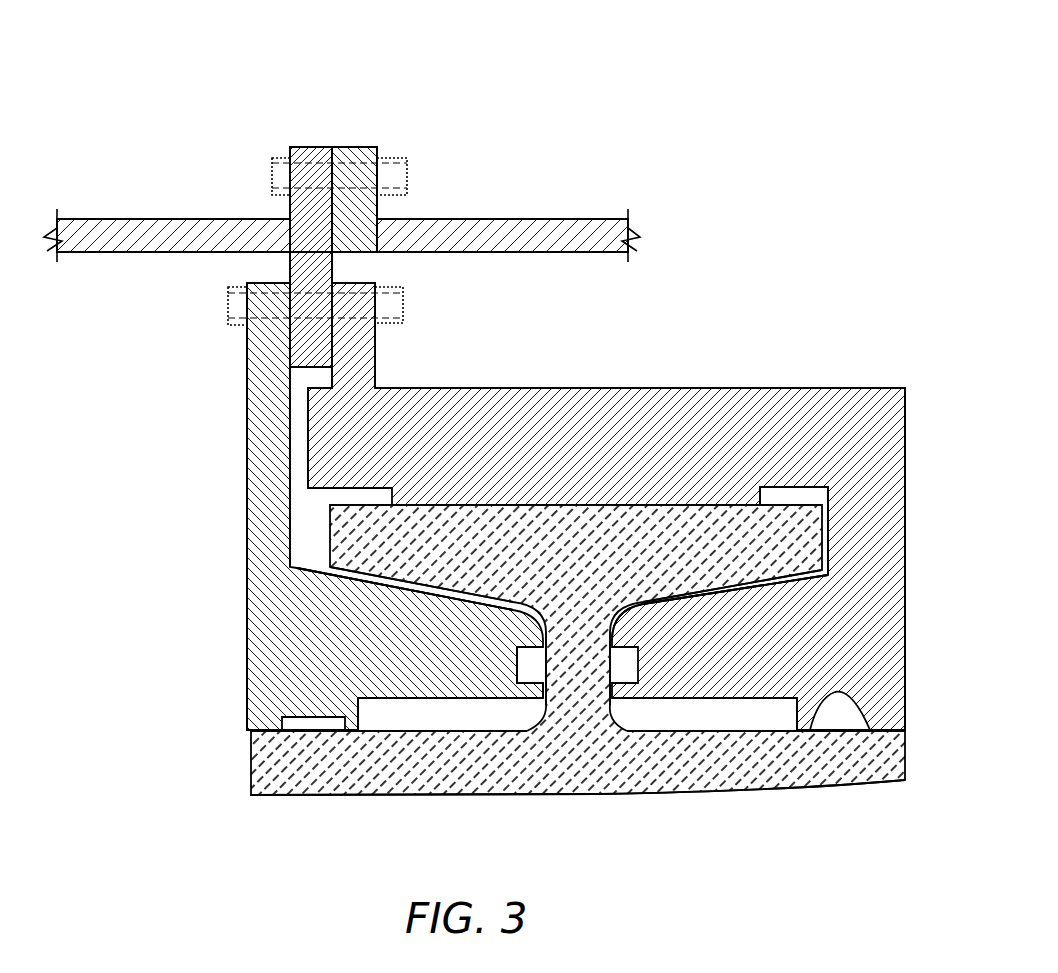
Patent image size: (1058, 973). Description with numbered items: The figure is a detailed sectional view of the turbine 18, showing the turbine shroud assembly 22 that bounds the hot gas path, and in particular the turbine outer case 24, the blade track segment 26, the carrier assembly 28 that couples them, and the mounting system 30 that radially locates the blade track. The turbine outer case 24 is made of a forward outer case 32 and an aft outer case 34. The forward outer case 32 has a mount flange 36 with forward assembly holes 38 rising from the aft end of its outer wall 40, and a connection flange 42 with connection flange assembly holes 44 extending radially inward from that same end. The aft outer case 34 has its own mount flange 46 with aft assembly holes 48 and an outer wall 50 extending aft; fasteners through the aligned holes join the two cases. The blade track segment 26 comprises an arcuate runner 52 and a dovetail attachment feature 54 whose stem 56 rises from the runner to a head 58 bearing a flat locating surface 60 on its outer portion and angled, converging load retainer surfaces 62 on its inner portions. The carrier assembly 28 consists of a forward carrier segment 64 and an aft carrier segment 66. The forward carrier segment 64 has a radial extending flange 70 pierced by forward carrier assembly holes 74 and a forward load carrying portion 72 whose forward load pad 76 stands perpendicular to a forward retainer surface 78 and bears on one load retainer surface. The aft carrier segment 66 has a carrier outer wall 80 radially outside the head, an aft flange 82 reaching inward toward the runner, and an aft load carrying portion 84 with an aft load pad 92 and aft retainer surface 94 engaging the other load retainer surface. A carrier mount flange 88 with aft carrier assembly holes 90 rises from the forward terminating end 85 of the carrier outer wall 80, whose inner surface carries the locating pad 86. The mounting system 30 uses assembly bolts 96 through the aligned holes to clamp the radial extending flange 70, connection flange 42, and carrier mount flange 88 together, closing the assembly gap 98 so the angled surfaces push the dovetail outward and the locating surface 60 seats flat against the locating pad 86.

The turbine 18 is at (782, 110).
The turbine shroud assembly 22 is at (736, 83).
The turbine outer case 24 is at (186, 145).
The blade track segment 26 is at (813, 792).
The carrier assembly 28 is at (692, 345).
The mounting system 30 is at (127, 147).
The forward outer case 32 is at (97, 232).
The aft outer case 34 is at (462, 208).
The mount flange 36 is at (288, 150).
The forward assembly holes 38 is at (272, 177).
The outer wall 40 is at (156, 246).
The connection flange 42 is at (316, 310).
The connection flange assembly holes 44 is at (320, 300).
The mount flange 46 is at (380, 148).
The aft assembly holes 48 is at (408, 176).
The outer wall 50 is at (527, 229).
The runner 52 is at (320, 790).
The dovetail attachment feature 54 is at (573, 662).
The stem 56 is at (573, 645).
The head 58 is at (697, 543).
The locating surface 60 is at (803, 503).
The load retainer surfaces 62 is at (366, 579).
The forward carrier segment 64 is at (246, 440).
The aft carrier segment 66 is at (908, 392).
The radial extending flange 70 is at (257, 525).
The forward load carrying portion 72 is at (327, 650).
The forward carrier assembly holes 74 is at (268, 306).
The forward load pad 76 is at (423, 588).
The forward retainer surface 78 is at (485, 600).
The carrier outer wall 80 is at (492, 391).
The aft flange 82 is at (853, 517).
The aft load carrying portion 84 is at (835, 653).
The forward terminating end 85 is at (313, 408).
The locating pad 86 is at (566, 512).
The carrier mount flange 88 is at (364, 303).
The aft carrier assembly holes 90 is at (366, 323).
The aft load pad 92 is at (722, 596).
The aft retainer surface 94 is at (700, 600).
The assembly bolts 96 is at (231, 300).
The assembly gap 98 is at (300, 443).